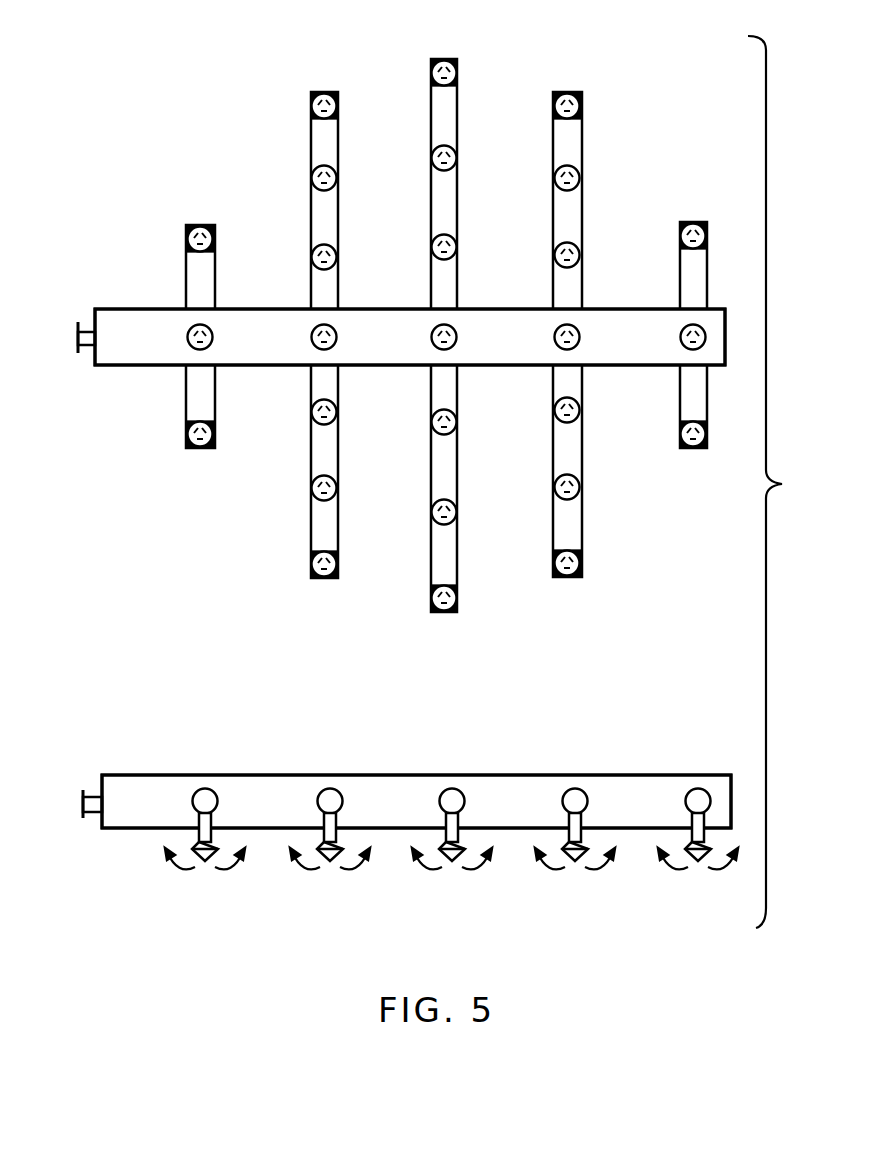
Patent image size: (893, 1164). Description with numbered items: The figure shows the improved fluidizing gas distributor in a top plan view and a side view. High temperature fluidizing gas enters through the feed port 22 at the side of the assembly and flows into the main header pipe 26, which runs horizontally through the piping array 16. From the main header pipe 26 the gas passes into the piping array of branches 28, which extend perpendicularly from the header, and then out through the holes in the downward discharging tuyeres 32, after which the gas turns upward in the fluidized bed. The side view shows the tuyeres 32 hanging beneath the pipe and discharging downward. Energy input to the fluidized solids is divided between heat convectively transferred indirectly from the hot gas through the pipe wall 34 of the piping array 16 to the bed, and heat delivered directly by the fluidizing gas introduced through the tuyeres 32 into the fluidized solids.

The piping array 16 is at (204, 487).
The feed port 22 is at (85, 328).
The main header pipe 26 is at (622, 307).
The branches 28 is at (565, 530).
The downward discharging tuyeres 32 is at (330, 864).
The pipe wall 34 is at (138, 777).